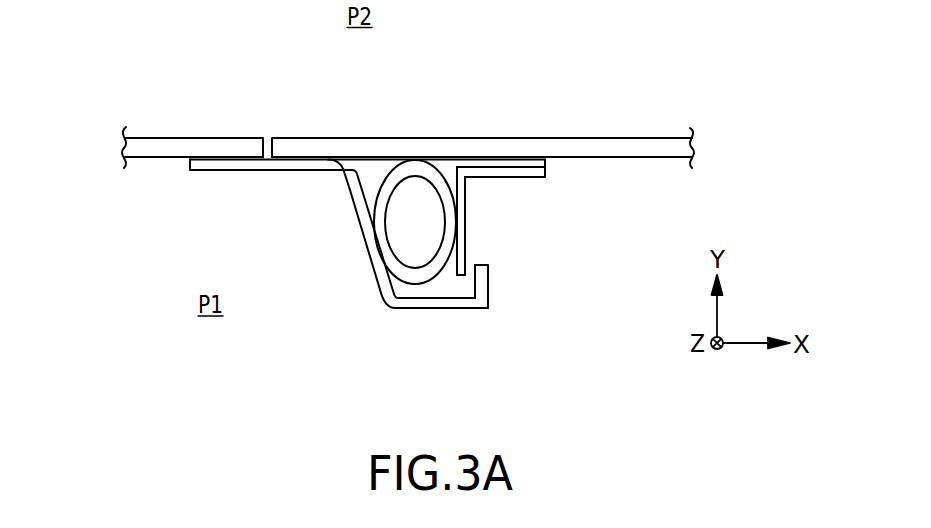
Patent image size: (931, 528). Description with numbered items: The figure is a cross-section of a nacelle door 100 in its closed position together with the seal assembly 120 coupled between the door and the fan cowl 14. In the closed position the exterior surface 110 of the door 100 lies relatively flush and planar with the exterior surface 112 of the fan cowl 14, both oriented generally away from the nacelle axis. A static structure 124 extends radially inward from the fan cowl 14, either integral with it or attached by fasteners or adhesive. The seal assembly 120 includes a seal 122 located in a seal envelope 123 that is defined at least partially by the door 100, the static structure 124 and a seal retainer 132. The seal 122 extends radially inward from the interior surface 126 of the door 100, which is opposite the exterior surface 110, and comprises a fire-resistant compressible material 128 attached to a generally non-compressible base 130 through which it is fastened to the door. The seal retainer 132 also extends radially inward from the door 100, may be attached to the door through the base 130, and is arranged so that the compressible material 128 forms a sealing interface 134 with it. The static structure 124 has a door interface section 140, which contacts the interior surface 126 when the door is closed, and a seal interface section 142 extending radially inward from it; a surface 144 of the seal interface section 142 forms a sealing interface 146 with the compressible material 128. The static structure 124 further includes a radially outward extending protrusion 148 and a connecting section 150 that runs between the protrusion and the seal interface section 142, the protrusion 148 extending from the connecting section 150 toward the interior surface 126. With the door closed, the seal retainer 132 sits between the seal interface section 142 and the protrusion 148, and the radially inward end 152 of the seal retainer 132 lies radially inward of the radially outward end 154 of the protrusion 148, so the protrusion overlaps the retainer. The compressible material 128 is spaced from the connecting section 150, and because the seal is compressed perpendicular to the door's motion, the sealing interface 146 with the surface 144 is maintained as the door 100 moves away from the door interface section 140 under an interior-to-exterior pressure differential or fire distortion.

The fan cowl 14 is at (207, 148).
The door 100 is at (567, 147).
The exterior surface of door 110 is at (662, 138).
The exterior surface of fan cowl 112 is at (142, 138).
The seal assembly 120 is at (280, 115).
The seal 122 is at (377, 155).
The seal envelope 123 is at (367, 185).
The static structure 124 is at (208, 169).
The interior surface of door 126 is at (652, 158).
The compressible material 128 is at (418, 175).
The base 130 is at (502, 165).
The seal retainer 132 is at (463, 197).
The sealing interface 134 is at (463, 217).
The door interface section 140 is at (250, 163).
The seal interface section 142 is at (360, 220).
The surface of seal interface section 144 is at (394, 288).
The sealing interface 146 is at (372, 250).
The radially outward extending protrusion 148 is at (488, 277).
The connecting section 150 is at (447, 300).
The radially inward end of seal retainer 152 is at (462, 275).
The radially outward end of protrusion 154 is at (477, 265).